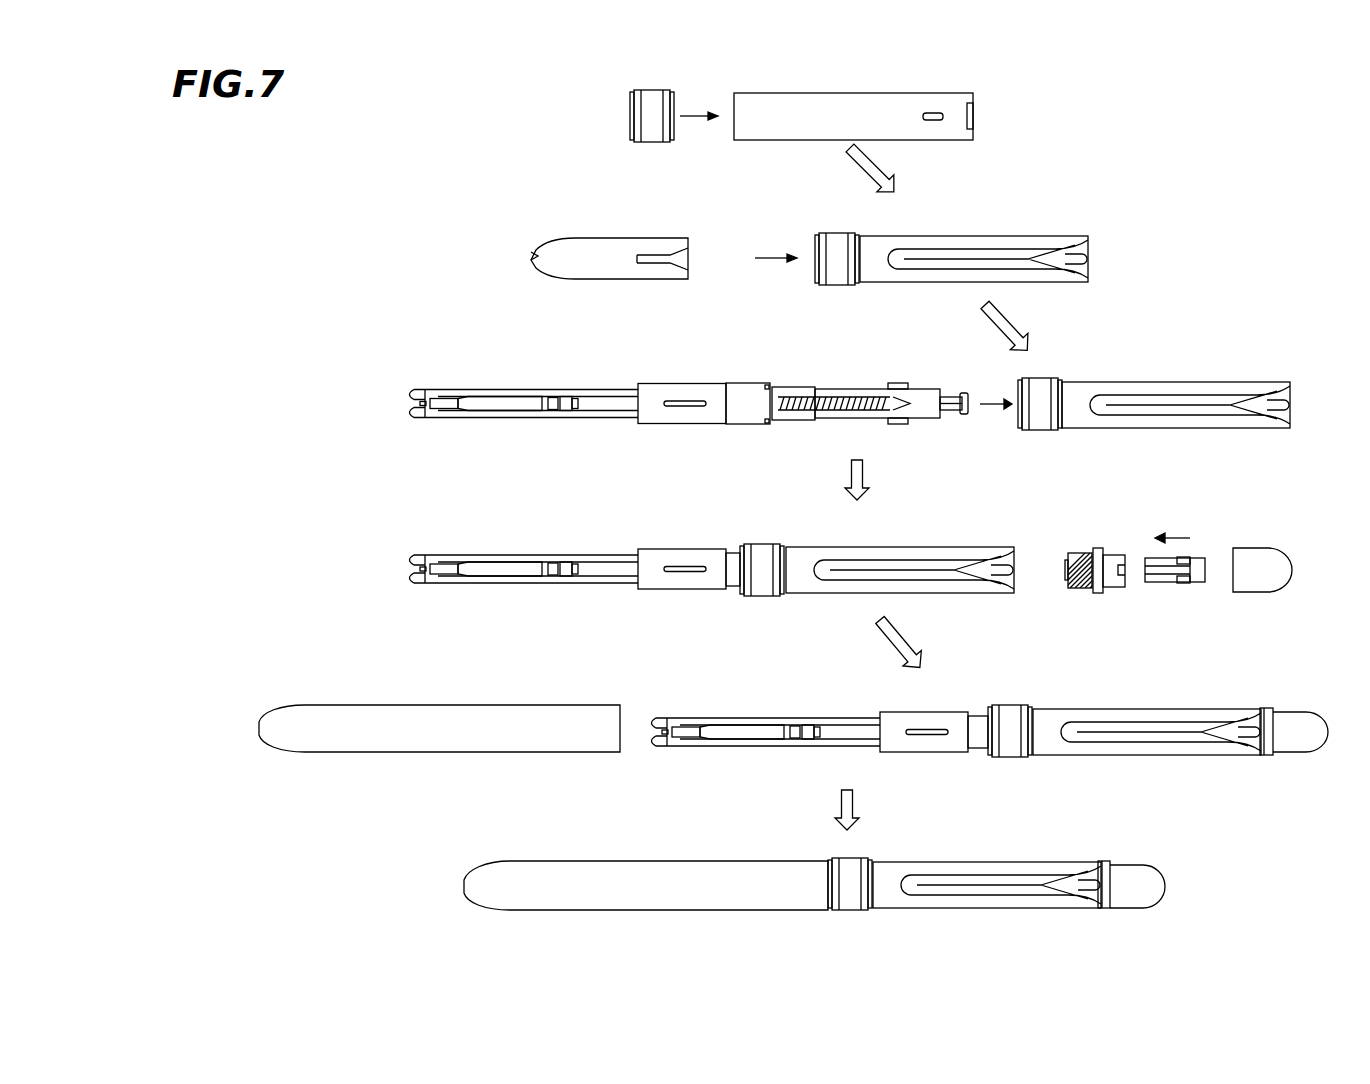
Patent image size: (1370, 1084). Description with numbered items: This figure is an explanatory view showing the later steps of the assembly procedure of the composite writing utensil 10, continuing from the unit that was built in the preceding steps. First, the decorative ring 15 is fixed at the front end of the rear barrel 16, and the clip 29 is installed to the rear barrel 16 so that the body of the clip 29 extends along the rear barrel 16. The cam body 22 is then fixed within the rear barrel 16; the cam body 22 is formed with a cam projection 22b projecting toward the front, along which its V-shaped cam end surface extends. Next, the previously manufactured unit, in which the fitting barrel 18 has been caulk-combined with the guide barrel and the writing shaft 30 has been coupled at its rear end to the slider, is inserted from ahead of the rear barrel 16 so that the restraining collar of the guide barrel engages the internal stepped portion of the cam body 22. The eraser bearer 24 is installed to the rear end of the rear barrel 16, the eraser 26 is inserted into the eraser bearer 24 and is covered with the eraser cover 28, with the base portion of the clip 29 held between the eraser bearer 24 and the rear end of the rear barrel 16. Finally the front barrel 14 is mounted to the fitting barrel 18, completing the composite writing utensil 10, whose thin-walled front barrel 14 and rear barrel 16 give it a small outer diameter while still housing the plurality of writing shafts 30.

The composite writing utensil 10 is at (1126, 840).
The front barrel 14 is at (528, 715).
The decorative ring 15 is at (655, 97).
The rear barrel 16 is at (850, 102).
The fitting barrel 18 is at (678, 558).
The cam body 22 is at (640, 240).
The cam projection 22b is at (556, 262).
The eraser bearer 24 is at (1094, 552).
The eraser 26 is at (1200, 560).
The eraser cover 28 is at (1262, 555).
The clip 29 is at (998, 256).
The writing shaft 30 is at (593, 582).